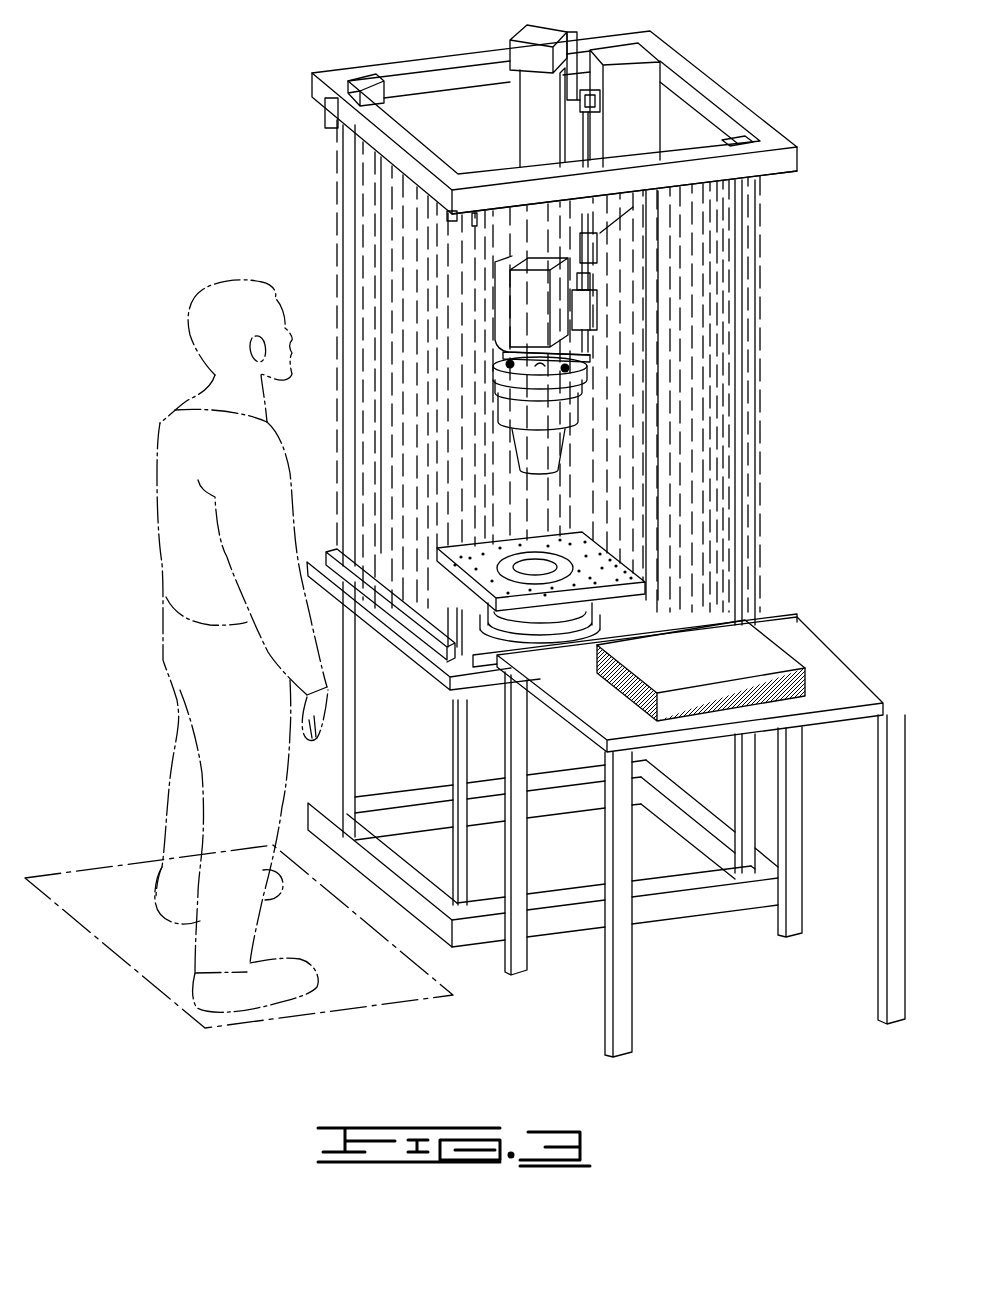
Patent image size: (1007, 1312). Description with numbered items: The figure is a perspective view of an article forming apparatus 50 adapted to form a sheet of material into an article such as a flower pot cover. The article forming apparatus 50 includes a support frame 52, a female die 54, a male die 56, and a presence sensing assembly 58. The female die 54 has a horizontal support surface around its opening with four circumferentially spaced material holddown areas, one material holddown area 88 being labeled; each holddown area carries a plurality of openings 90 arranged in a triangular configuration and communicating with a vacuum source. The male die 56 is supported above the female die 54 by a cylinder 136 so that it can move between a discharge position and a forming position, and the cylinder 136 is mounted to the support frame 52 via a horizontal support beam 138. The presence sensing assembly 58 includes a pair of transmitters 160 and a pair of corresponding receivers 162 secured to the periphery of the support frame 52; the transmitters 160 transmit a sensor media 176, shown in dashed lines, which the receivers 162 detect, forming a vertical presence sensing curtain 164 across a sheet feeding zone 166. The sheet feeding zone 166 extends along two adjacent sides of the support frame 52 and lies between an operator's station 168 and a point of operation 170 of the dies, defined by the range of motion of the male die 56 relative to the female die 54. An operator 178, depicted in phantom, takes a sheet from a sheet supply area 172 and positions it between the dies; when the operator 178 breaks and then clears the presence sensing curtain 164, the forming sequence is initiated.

The article forming apparatus 50 is at (390, 58).
The support frame 52 is at (313, 84).
The female die 54 is at (605, 563).
The male die 56 is at (567, 455).
The presence sensing assembly 58 is at (770, 185).
The material holddown area 88 is at (568, 545).
The openings 90 is at (605, 600).
The cylinder 136 is at (520, 130).
The horizontal support beam 138 is at (600, 325).
The transmitters 160 is at (327, 128).
The receivers 162 is at (735, 192).
The presence sensing curtain 164 is at (400, 257).
The sheet feeding zone 166 is at (462, 346).
The operator's station 168 is at (365, 992).
The point of operation 170 is at (558, 506).
The sheet supply area 172 is at (757, 652).
The sensor media 176 is at (690, 383).
The operator 178 is at (160, 428).